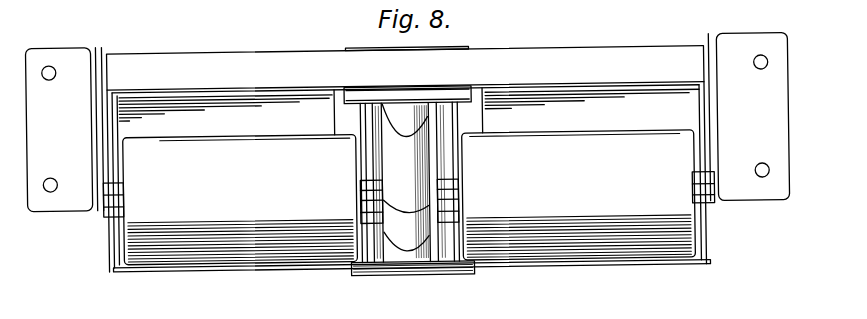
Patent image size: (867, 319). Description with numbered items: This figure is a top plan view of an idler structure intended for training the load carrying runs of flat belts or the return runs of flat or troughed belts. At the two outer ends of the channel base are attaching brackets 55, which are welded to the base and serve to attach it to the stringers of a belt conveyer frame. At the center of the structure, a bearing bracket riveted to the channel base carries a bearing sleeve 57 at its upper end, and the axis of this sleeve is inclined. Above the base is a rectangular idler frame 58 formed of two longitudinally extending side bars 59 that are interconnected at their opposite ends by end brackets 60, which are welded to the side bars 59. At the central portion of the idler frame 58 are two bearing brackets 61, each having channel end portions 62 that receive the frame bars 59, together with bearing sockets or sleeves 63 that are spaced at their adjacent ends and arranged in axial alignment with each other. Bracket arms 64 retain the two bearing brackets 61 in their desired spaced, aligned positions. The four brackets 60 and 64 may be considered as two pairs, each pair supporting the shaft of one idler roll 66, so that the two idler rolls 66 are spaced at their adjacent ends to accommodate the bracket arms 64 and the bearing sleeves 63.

The attaching bracket 55 is at (407, 122).
The bearing sleeve 57 is at (408, 182).
The idler frame 58 is at (597, 277).
The side bar 59 is at (556, 76).
The end bracket 60 is at (115, 245).
The bearing bracket 61 is at (345, 107).
The channel end portion 62 is at (356, 83).
The bearing socket or sleeve 63 is at (405, 178).
The bracket arm 64 is at (380, 279).
The idler roll 66 is at (275, 189).